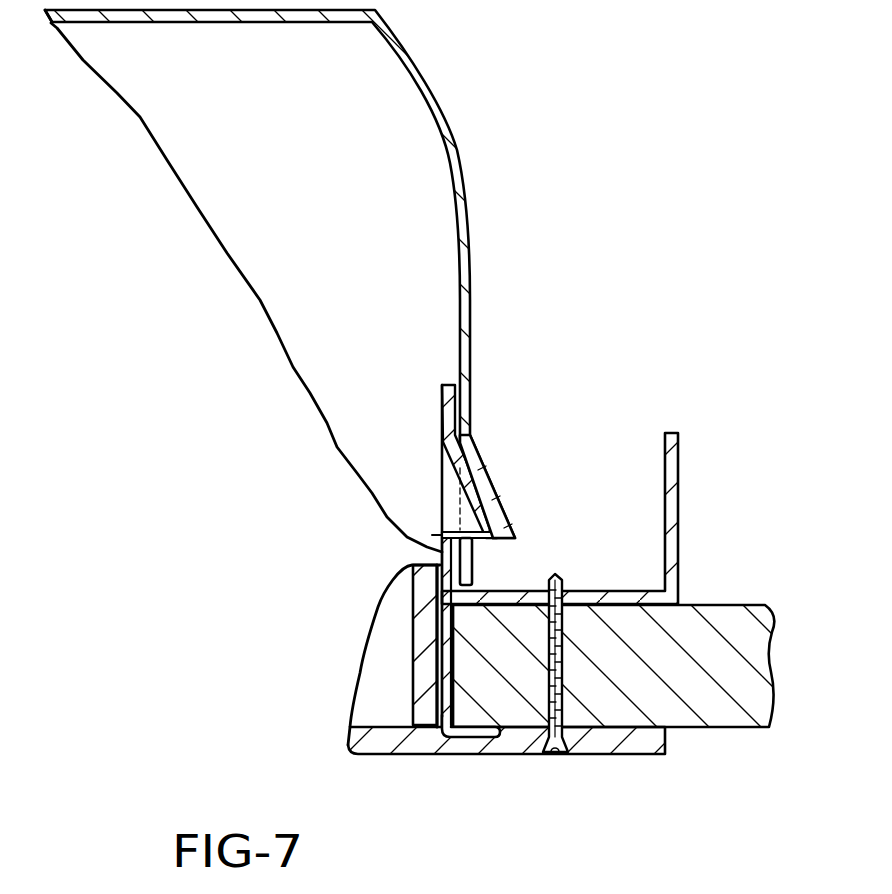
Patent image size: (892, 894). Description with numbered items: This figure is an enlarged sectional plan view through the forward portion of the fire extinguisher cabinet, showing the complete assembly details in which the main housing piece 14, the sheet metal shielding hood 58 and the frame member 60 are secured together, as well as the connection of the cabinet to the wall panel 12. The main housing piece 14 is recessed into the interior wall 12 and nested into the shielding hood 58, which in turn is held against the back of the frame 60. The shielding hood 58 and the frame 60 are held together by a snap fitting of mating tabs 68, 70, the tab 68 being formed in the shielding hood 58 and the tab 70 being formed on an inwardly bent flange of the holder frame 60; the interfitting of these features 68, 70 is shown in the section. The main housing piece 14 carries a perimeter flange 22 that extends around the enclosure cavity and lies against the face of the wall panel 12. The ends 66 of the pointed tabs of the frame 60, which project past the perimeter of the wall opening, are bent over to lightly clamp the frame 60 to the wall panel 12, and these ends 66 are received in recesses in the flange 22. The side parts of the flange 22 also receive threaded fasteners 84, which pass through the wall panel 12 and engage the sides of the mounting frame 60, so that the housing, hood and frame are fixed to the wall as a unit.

The interior wall 12 is at (722, 730).
The main housing piece 14 is at (363, 757).
The perimeter flange 22 is at (620, 757).
The shielding hood 58 is at (471, 268).
The frame member 60 is at (679, 508).
The ends of pointed tabs 66 is at (468, 738).
The mating tab 68 is at (480, 484).
The mating tab 70 is at (507, 507).
The threaded fasteners 84 is at (568, 625).